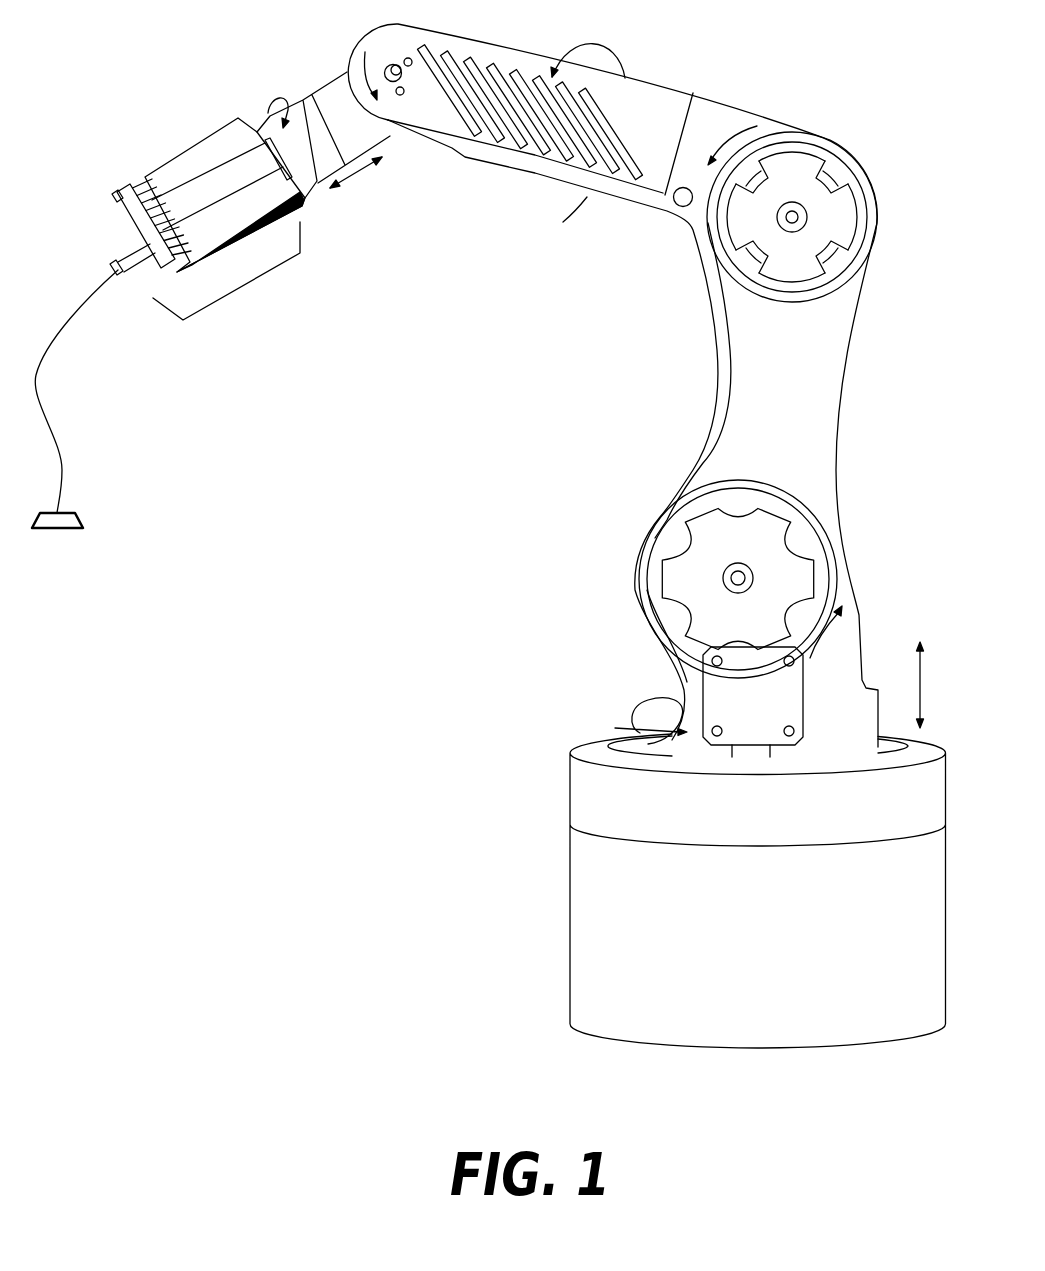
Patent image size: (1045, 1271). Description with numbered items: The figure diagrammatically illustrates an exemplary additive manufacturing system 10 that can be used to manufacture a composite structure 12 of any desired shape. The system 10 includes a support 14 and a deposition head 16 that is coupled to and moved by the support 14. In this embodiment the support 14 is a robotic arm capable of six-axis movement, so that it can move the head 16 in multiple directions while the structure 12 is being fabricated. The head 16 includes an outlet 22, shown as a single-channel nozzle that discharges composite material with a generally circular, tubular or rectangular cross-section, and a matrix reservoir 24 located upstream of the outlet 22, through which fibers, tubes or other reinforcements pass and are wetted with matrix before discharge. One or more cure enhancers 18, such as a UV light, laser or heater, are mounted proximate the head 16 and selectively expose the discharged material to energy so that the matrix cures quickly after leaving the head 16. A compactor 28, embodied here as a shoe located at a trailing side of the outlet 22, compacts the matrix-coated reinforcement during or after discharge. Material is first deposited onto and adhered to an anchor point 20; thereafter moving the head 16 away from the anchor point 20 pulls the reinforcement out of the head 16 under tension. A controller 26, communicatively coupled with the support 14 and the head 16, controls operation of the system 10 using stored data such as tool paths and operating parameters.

The system 10 is at (384, 776).
The composite structure 12 is at (63, 478).
The support 14 is at (784, 443).
The deposition head 16 is at (243, 288).
The cure enhancer 18 is at (153, 263).
The anchor point 20 is at (50, 530).
The outlet 22 is at (140, 256).
The matrix reservoir 24 is at (190, 148).
The controller 26 is at (765, 705).
The compactor 28 is at (112, 282).